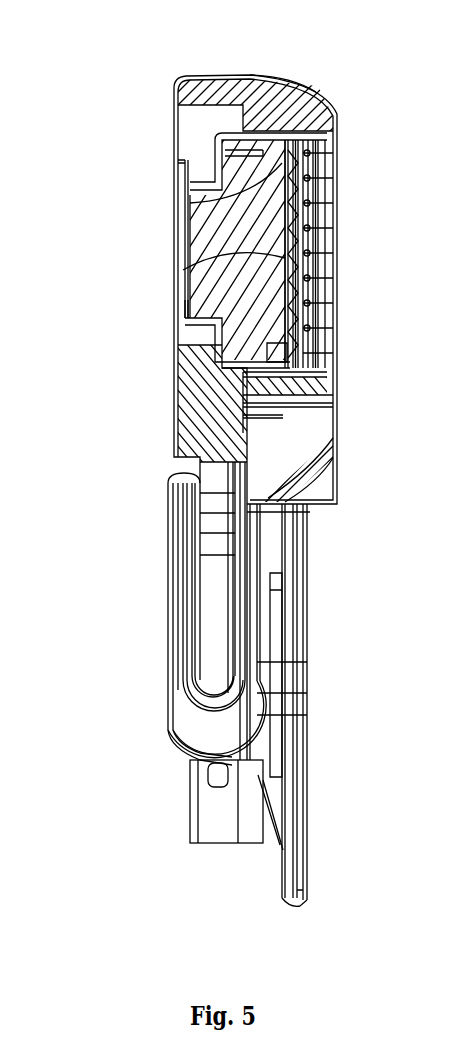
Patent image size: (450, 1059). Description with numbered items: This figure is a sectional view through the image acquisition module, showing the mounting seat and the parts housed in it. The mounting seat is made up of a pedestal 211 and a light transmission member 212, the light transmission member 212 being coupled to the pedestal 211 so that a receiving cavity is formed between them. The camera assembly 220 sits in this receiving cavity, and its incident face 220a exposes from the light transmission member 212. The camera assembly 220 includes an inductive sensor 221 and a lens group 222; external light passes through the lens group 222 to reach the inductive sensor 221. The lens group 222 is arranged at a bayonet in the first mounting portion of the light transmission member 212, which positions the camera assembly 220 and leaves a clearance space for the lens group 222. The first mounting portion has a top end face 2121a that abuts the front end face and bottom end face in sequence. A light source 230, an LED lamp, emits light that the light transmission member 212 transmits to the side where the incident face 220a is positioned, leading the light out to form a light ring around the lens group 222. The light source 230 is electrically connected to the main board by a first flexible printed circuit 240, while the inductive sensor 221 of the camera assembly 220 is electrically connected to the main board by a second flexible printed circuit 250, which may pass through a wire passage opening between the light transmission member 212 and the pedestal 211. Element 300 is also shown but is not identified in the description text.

The pedestal 211 is at (205, 75).
The top end face 2121a is at (250, 76).
The holder plate 300 is at (178, 176).
The camera assembly 220 is at (229, 250).
The lens group 222 is at (198, 198).
The inductive sensor 221 is at (198, 264).
The incident face 220a is at (185, 300).
The light transmission member 212 is at (182, 412).
The light source 230 is at (185, 520).
The first flexible printed circuit 240 is at (238, 650).
The second flexible printed circuit 250 is at (263, 547).